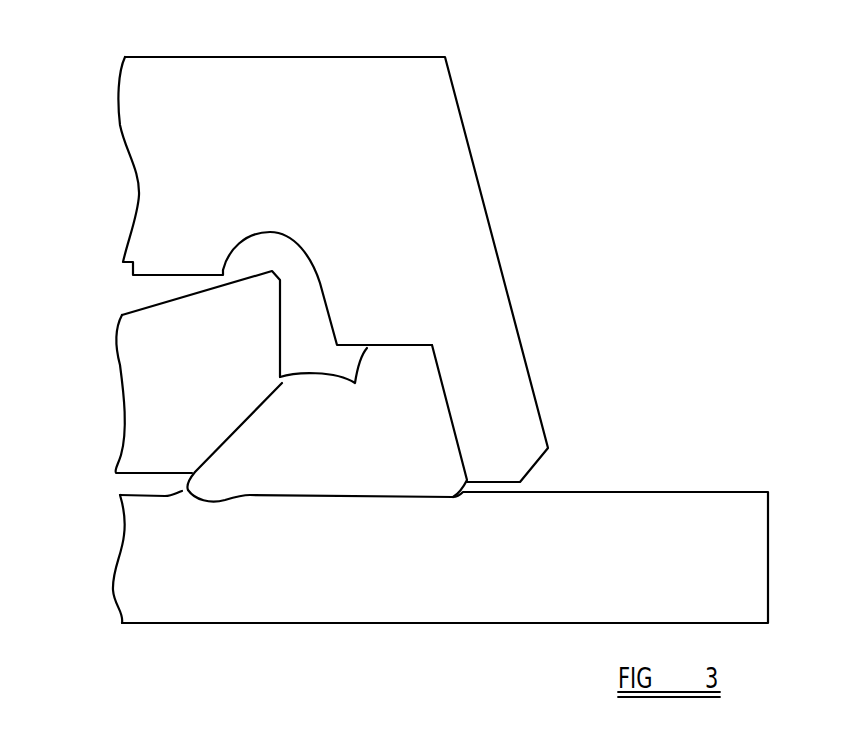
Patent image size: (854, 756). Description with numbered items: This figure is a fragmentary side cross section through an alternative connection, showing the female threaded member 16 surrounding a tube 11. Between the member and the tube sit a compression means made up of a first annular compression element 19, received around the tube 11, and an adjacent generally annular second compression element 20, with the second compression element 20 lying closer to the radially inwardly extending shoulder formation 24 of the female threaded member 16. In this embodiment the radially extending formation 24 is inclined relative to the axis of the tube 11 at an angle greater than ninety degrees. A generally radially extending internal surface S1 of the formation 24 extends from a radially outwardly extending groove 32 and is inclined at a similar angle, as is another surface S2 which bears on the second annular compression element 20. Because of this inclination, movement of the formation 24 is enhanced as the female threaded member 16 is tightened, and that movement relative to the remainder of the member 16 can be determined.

The tube 11 is at (637, 520).
The female threaded member 16 is at (402, 132).
The first annular compression element 19 is at (193, 335).
The second compression element 20 is at (412, 397).
The radially inwardly extending shoulder formation 24 is at (518, 444).
The radially outwardly extending groove 32 is at (267, 242).
The generally radially extending internal surface S1 is at (325, 308).
The surface bearing on second compression element S2 is at (455, 430).